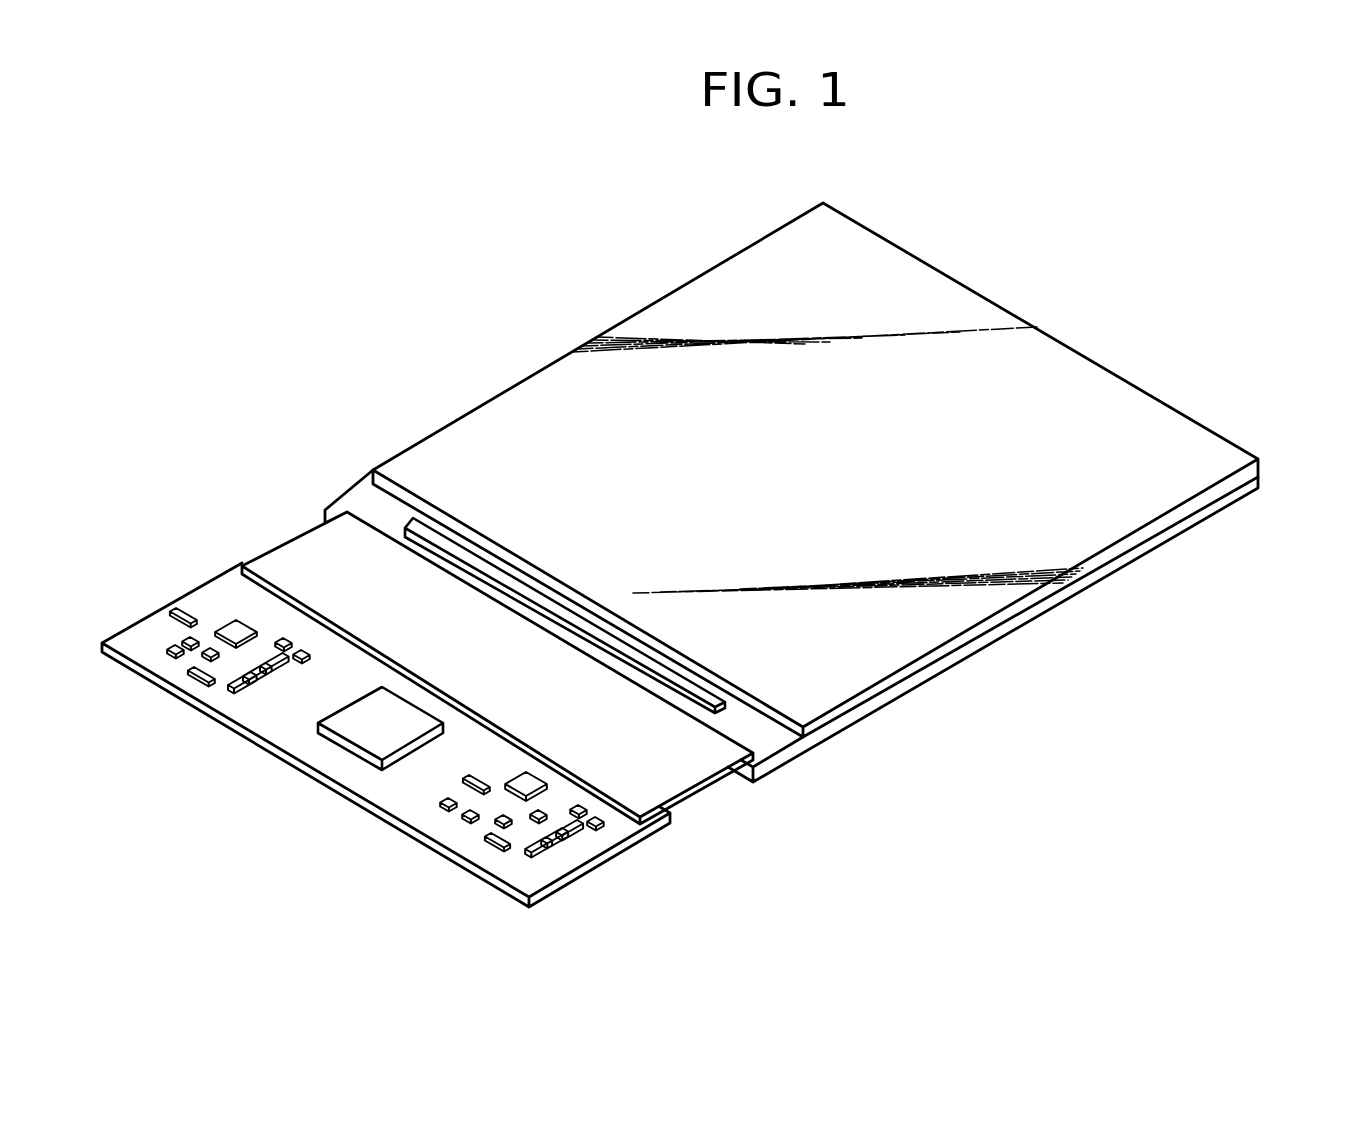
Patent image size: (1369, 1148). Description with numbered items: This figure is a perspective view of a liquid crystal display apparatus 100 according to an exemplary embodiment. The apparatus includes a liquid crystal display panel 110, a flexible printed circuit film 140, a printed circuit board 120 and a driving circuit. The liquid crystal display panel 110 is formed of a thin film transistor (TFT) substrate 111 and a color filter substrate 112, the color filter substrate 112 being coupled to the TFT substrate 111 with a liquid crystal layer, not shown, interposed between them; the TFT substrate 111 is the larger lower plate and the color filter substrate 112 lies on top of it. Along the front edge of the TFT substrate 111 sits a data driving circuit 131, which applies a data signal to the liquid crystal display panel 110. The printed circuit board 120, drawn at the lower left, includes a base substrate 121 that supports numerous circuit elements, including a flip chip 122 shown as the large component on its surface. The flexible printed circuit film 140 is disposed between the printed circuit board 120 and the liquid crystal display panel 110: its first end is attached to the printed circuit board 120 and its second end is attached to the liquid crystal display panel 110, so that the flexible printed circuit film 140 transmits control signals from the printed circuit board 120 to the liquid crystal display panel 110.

The liquid crystal display apparatus 100 is at (746, 143).
The liquid crystal display panel 110 is at (928, 853).
The thin film transistor (TFT) substrate 111 is at (765, 743).
The color filter substrate 112 is at (822, 697).
The printed circuit board 120 is at (252, 818).
The base substrate 121 is at (367, 793).
The flip chip 122 is at (358, 732).
The data driving circuit 131 is at (441, 540).
The flexible printed circuit film 140 is at (674, 780).